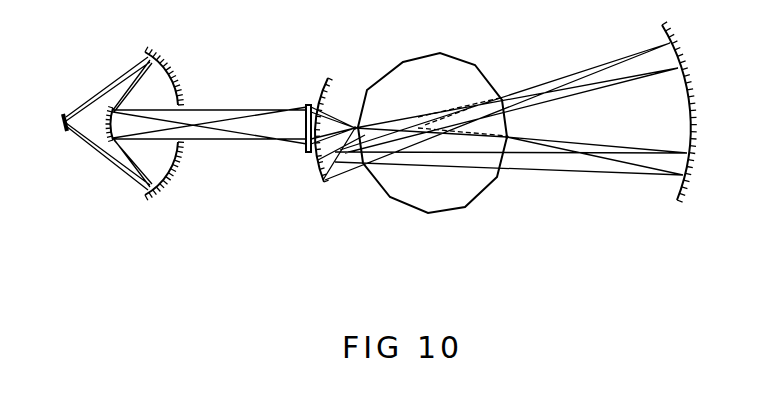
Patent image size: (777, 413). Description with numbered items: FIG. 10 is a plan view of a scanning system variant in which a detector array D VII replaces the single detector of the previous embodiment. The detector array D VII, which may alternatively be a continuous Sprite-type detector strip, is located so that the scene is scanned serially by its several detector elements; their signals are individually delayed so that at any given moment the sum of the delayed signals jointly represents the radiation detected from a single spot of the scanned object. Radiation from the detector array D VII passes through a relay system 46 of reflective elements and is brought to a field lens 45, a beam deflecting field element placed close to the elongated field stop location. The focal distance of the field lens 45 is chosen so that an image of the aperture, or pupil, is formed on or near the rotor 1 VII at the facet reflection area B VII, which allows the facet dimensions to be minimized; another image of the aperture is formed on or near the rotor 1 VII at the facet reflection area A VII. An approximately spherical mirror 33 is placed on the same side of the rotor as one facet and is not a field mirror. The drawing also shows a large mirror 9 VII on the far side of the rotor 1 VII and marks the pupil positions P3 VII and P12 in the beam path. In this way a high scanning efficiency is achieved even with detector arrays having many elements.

The rotor 1 is at (420, 193).
The concave mirror 9 is at (675, 198).
The approximately spherical mirror 33 is at (330, 173).
The field lens 45 is at (308, 150).
The mirror relay system 46 is at (157, 200).
The facet reflection area A is at (364, 204).
The facet reflection area B is at (510, 122).
The detector array D is at (80, 148).
The pupil P3 is at (417, 118).
The pupil P12 is at (308, 127).